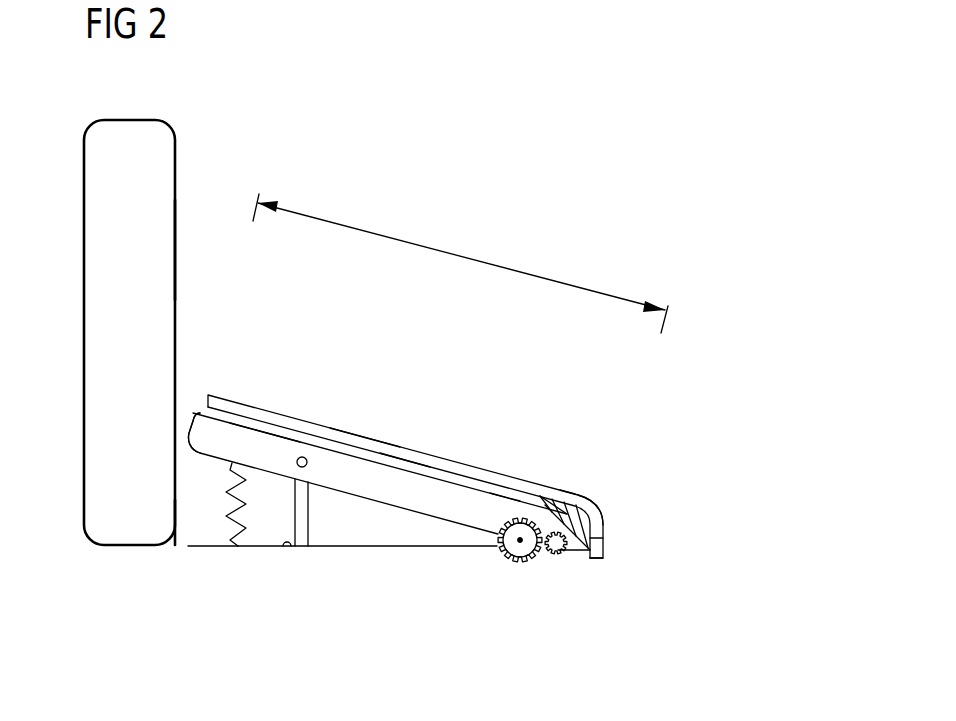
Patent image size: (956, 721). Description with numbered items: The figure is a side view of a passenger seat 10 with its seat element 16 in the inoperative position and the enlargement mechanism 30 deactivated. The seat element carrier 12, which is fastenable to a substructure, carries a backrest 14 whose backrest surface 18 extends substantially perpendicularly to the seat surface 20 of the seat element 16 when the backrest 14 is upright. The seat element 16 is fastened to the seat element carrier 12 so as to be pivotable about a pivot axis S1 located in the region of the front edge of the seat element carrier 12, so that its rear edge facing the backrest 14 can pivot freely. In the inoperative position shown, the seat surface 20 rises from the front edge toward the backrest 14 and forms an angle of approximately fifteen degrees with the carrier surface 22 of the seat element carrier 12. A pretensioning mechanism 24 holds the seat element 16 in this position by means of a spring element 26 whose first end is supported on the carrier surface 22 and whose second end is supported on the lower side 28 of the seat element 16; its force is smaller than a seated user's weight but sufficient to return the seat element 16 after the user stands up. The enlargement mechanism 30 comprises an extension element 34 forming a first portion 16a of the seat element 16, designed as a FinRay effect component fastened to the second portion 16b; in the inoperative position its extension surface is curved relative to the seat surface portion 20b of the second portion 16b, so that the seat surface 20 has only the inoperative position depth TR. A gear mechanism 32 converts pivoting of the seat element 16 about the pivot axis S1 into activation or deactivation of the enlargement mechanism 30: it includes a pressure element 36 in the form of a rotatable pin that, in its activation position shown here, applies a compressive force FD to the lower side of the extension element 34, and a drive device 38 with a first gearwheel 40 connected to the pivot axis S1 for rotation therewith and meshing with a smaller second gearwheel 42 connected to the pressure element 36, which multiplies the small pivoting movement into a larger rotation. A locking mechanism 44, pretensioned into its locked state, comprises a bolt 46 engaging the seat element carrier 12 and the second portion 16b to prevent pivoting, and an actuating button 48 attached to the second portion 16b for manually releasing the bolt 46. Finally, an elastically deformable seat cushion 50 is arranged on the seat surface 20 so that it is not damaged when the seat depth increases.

The passenger seat 10 is at (590, 186).
The seat element carrier 12 is at (425, 548).
The backrest 14 is at (128, 124).
The seat element 16 is at (387, 500).
The first portion of the seat element 16a is at (567, 512).
The second portion of the seat element 16b is at (258, 433).
The backrest surface 18 is at (177, 247).
The seat surface 20 is at (358, 453).
The seat surface portion 20b is at (410, 466).
The carrier surface 22 is at (287, 549).
The pretensioning mechanism 24 is at (190, 528).
The spring element 26 is at (227, 540).
The lower side of the seat element 28 is at (203, 461).
The enlargement mechanism 30 is at (560, 455).
The gear mechanism 32 is at (480, 572).
The extension element 34 is at (604, 539).
The pressure element 36 is at (594, 500).
The drive device 38 is at (510, 490).
The first gearwheel 40 is at (515, 562).
The second gearwheel 42 is at (558, 556).
The locking mechanism 44 is at (268, 526).
The bolt 46 is at (308, 546).
The actuating button 48 is at (310, 455).
The seat cushion 50 is at (233, 407).
The inoperative position depth TR is at (462, 256).
The compressive force FD is at (578, 575).
The pivot axis S1 is at (521, 542).